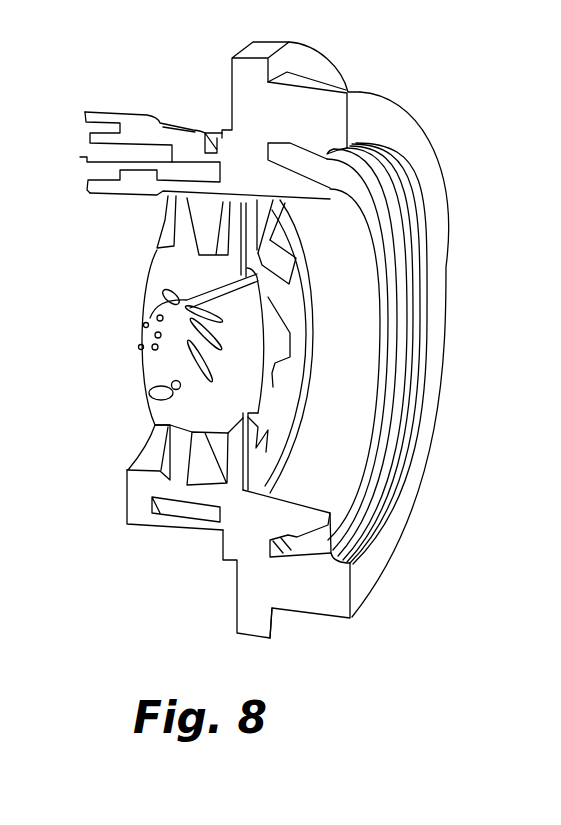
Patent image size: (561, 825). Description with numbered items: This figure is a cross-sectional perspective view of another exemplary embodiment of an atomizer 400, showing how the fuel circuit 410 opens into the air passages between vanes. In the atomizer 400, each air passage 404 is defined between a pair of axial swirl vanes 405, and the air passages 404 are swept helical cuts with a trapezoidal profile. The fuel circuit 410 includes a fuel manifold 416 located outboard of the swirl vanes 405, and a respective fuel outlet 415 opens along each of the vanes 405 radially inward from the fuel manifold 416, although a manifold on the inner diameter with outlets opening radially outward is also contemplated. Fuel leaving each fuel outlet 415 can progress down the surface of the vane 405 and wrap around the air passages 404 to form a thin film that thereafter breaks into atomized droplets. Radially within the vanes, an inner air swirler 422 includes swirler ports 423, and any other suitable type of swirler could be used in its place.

The atomizer 400 is at (476, 86).
The air passage 404 is at (278, 388).
The axial swirl vane 405 is at (281, 350).
The fuel circuit 410 is at (122, 150).
The fuel outlet 415 is at (157, 253).
The fuel manifold 416 is at (168, 507).
The inner air swirler 422 is at (140, 333).
The swirler port 423 is at (158, 355).